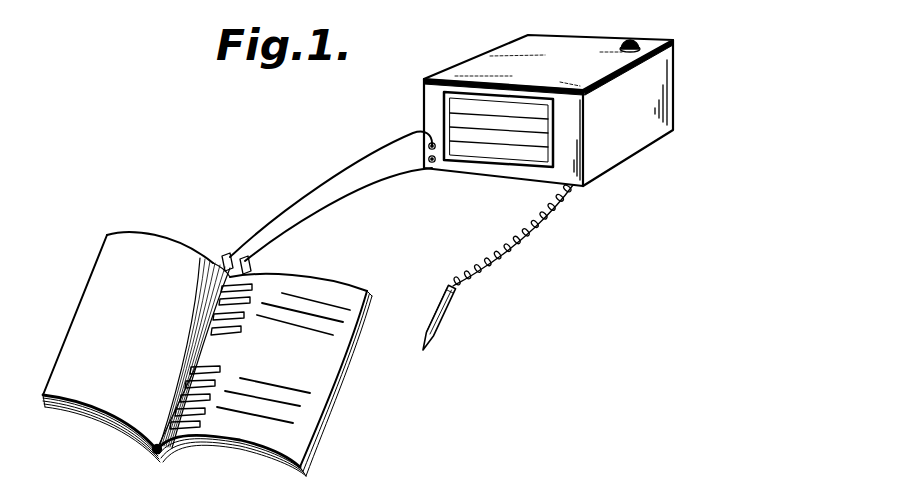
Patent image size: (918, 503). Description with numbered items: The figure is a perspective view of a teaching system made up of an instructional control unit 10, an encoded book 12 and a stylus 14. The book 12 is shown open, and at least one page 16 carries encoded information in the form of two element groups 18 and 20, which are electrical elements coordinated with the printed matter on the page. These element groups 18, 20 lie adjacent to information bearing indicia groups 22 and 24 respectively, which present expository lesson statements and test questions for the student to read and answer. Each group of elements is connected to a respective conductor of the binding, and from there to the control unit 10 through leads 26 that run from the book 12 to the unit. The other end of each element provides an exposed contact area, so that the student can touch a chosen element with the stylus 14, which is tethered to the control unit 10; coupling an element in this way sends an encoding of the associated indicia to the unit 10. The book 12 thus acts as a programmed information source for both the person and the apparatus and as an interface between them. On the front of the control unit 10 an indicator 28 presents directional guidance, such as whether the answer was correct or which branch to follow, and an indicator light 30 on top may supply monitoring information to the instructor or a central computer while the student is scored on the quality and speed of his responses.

The instructional control unit 10 is at (683, 80).
The encoded book 12 is at (92, 274).
The stylus 14 is at (442, 317).
The page 16 is at (307, 413).
The element group 18 is at (209, 306).
The element group 20 is at (152, 448).
The indicia group 22 is at (340, 320).
The indicia group 24 is at (313, 381).
The leads 26 is at (299, 203).
The indicator 28 is at (496, 146).
The indicator light 30 is at (633, 44).